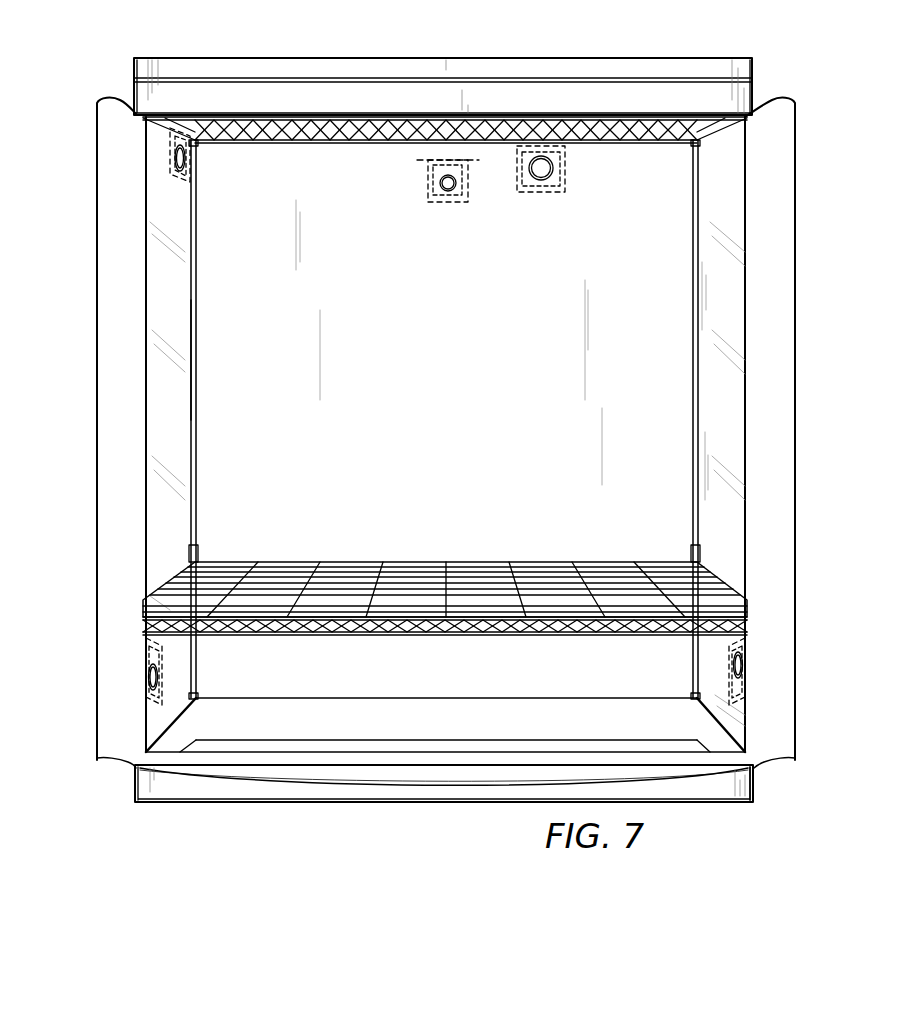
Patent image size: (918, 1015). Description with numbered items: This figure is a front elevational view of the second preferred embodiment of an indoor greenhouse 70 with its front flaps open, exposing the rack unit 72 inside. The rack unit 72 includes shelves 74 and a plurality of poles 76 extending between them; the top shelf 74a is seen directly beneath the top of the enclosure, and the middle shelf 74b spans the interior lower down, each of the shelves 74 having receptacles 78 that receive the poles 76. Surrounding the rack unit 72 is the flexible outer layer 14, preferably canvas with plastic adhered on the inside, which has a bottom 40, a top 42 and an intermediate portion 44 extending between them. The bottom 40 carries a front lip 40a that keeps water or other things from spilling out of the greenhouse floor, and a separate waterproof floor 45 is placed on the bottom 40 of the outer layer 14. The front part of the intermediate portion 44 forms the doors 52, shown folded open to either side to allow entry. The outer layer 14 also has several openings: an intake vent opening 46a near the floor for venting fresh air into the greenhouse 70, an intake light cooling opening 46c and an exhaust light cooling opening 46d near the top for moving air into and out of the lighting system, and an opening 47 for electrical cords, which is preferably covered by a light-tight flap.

The indoor greenhouse 70 is at (78, 82).
The top 42 is at (600, 58).
The doors 52 is at (110, 233).
The top shelf 74a is at (325, 130).
The intermediate portion 44 is at (195, 295).
The rack unit 72 is at (197, 355).
The poles 76 is at (197, 412).
The receptacles 78 is at (196, 550).
The shelves 74 is at (390, 560).
The middle shelf 74b is at (480, 575).
The intake light cooling opening 46c is at (186, 165).
The opening for electrical cords 47 is at (452, 190).
The exhaust light cooling opening 46d is at (553, 176).
The intake vent opening 46a is at (160, 678).
The waterproof floor 45 is at (440, 702).
The bottom 40 is at (142, 796).
The front lip 40a is at (748, 788).
The outer layer 14 is at (480, 365).